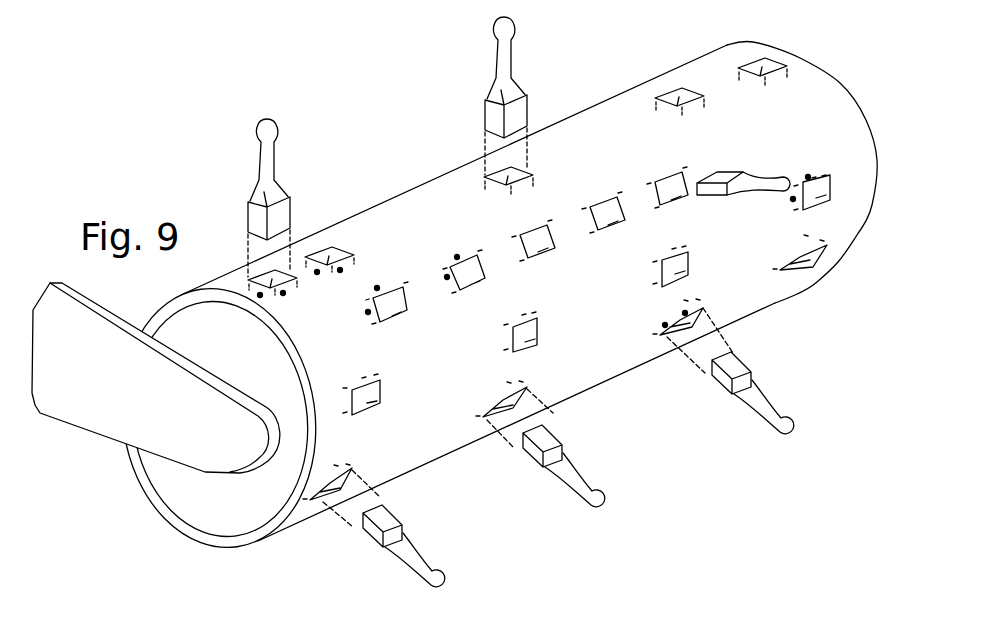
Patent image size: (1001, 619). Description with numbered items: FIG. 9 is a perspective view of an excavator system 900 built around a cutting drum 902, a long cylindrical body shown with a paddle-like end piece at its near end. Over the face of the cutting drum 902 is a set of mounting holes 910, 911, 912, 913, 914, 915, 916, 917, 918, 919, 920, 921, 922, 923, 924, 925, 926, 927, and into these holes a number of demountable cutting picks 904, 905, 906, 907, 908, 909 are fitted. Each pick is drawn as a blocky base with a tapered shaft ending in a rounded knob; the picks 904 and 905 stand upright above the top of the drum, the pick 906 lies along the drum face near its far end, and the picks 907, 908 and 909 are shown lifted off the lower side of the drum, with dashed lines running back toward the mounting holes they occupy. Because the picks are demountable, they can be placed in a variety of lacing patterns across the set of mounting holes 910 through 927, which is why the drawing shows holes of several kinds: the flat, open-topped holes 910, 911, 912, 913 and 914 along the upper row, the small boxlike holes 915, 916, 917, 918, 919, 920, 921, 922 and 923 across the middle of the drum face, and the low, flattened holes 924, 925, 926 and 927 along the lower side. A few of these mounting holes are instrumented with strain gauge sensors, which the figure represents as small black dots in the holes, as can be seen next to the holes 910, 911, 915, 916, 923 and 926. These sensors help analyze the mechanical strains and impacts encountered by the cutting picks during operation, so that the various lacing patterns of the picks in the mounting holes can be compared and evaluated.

The excavator system 900 is at (857, 27).
The cutting drum 902 is at (192, 540).
The demountable cutting pick 904 is at (277, 145).
The demountable cutting pick 905 is at (512, 45).
The demountable cutting pick 906 is at (757, 178).
The demountable cutting pick 907 is at (418, 549).
The demountable cutting pick 908 is at (580, 473).
The demountable cutting pick 909 is at (770, 398).
The mounting hole 910 is at (276, 296).
The mounting hole 911 is at (340, 248).
The mounting hole 912 is at (497, 188).
The mounting hole 913 is at (663, 109).
The mounting hole 914 is at (752, 80).
The mounting hole 915 is at (390, 322).
The mounting hole 916 is at (475, 289).
The mounting hole 917 is at (538, 254).
The mounting hole 918 is at (606, 228).
The mounting hole 919 is at (672, 204).
The mounting hole 920 is at (381, 389).
The mounting hole 921 is at (537, 327).
The mounting hole 922 is at (689, 258).
The mounting hole 923 is at (812, 176).
The mounting hole 924 is at (342, 477).
The mounting hole 925 is at (512, 393).
The mounting hole 926 is at (690, 310).
The mounting hole 927 is at (804, 256).